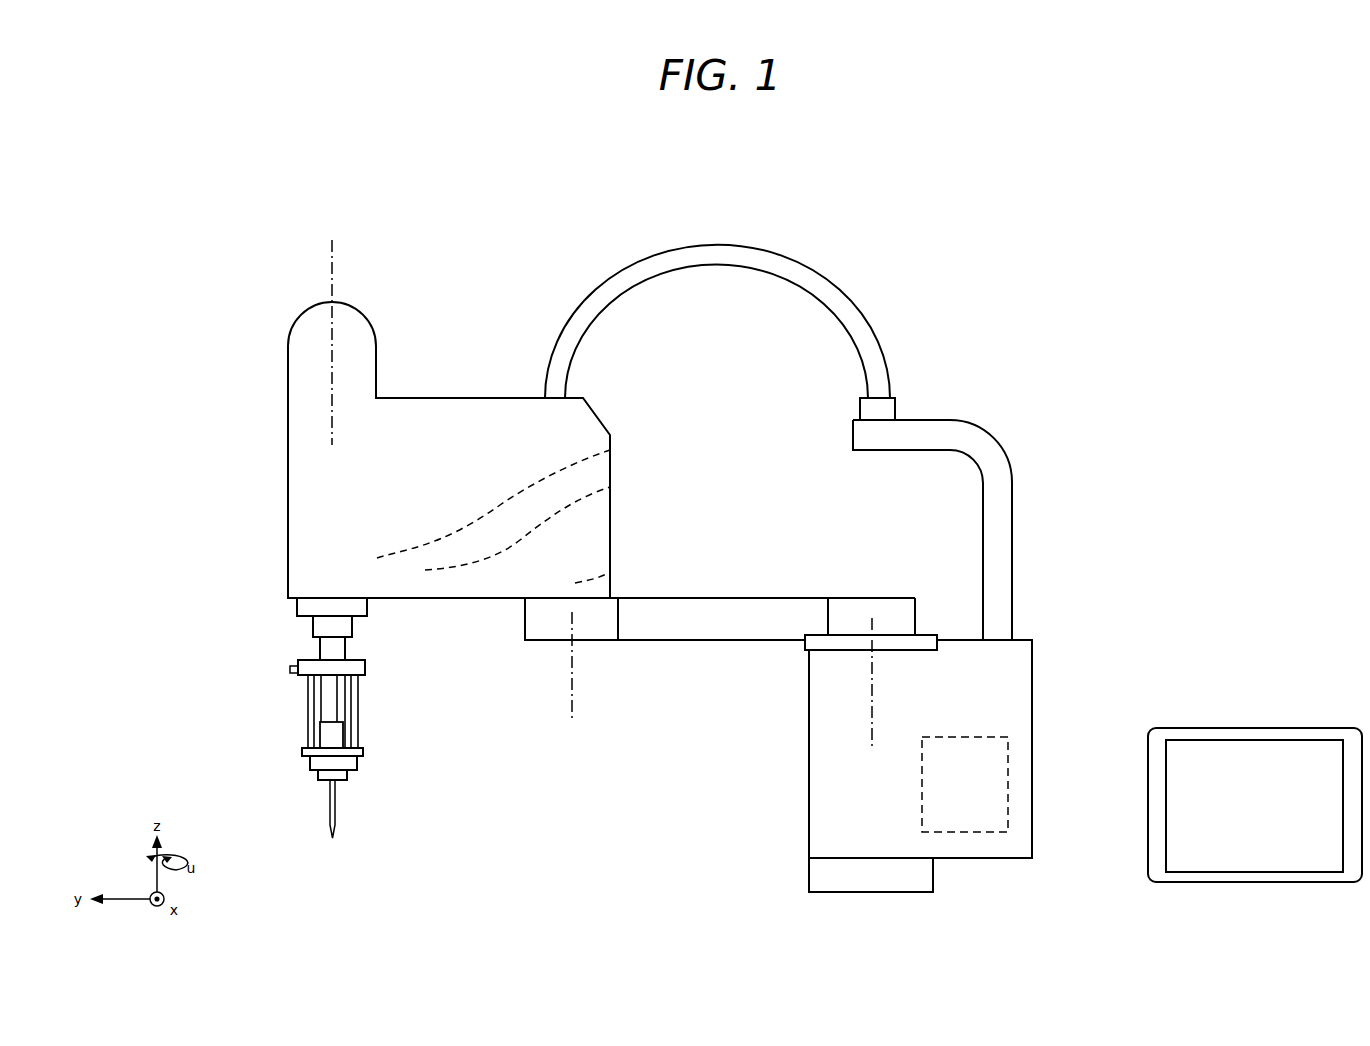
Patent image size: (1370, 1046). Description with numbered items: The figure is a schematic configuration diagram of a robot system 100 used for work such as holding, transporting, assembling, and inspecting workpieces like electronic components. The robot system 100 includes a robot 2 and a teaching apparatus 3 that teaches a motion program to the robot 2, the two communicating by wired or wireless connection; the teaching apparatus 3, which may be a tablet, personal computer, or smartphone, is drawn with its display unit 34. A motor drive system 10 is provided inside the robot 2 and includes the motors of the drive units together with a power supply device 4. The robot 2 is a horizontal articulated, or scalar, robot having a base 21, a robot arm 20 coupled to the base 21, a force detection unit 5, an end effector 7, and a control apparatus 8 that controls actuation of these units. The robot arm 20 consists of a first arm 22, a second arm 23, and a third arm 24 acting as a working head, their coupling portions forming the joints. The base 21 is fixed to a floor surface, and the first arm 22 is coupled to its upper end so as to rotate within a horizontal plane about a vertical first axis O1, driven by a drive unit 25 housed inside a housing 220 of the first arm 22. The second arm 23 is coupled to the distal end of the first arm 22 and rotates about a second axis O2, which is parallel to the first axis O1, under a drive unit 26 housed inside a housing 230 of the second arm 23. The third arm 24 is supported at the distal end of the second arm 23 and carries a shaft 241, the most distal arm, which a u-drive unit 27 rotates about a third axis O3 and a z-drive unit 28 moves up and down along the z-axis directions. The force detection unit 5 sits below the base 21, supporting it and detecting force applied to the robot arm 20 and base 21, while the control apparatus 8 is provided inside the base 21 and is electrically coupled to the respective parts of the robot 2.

The robot system 100 is at (1030, 192).
The motor drive system 10 is at (908, 262).
The robot 2 is at (628, 248).
The robot arm 20 is at (732, 580).
The base 21 is at (1002, 686).
The first arm 22 is at (663, 620).
The second arm 23 is at (312, 410).
The housing 230 is at (457, 383).
The housing 220 is at (794, 618).
The third arm 24 is at (330, 628).
The shaft 241 is at (345, 651).
The drive unit 25 is at (717, 618).
The drive unit 26 is at (610, 572).
The u-drive unit 27 is at (610, 487).
The z-drive unit 28 is at (610, 450).
The power supply device 4 is at (885, 618).
The force detection unit 5 is at (838, 873).
The end effector 7 is at (357, 766).
The control apparatus 8 is at (1008, 789).
The teaching apparatus 3 is at (1310, 728).
The display unit 34 is at (1256, 842).
The first axis O1 is at (868, 728).
The second axis O2 is at (566, 686).
The third axis O3 is at (336, 255).